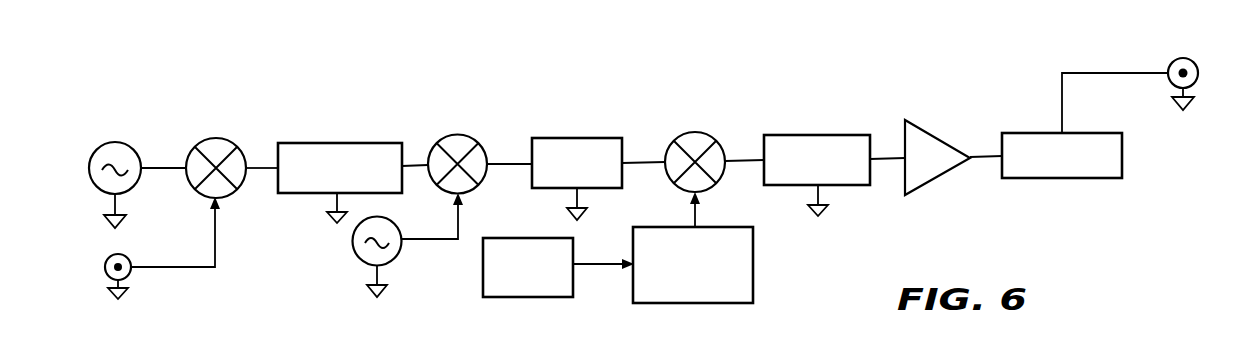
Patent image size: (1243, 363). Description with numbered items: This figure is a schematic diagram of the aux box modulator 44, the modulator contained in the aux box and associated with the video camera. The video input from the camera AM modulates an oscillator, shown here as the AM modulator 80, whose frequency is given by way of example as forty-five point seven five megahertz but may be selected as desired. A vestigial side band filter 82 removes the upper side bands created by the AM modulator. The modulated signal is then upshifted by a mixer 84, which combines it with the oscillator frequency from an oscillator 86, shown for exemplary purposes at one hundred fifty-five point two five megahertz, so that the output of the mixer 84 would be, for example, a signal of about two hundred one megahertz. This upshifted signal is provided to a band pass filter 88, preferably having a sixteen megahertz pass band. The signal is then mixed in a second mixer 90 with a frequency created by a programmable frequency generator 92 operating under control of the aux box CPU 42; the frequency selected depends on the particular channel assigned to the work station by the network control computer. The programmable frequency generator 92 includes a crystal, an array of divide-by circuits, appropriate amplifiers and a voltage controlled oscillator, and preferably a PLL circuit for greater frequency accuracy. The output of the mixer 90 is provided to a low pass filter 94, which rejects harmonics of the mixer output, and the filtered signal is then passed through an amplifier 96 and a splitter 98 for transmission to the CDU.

The aux box modulator 44 is at (735, 67).
The aux box CPU 42 is at (529, 238).
The AM modulator 80 is at (237, 195).
The vestigial side band filter 82 is at (318, 143).
The mixer 84 is at (483, 148).
The oscillator 86 is at (399, 251).
The band pass filter 88 is at (585, 138).
The mixer 90 is at (722, 150).
The programmable frequency generator 92 is at (740, 227).
The low pass filter 94 is at (842, 135).
The amplifier 96 is at (934, 130).
The splitter 98 is at (1025, 133).